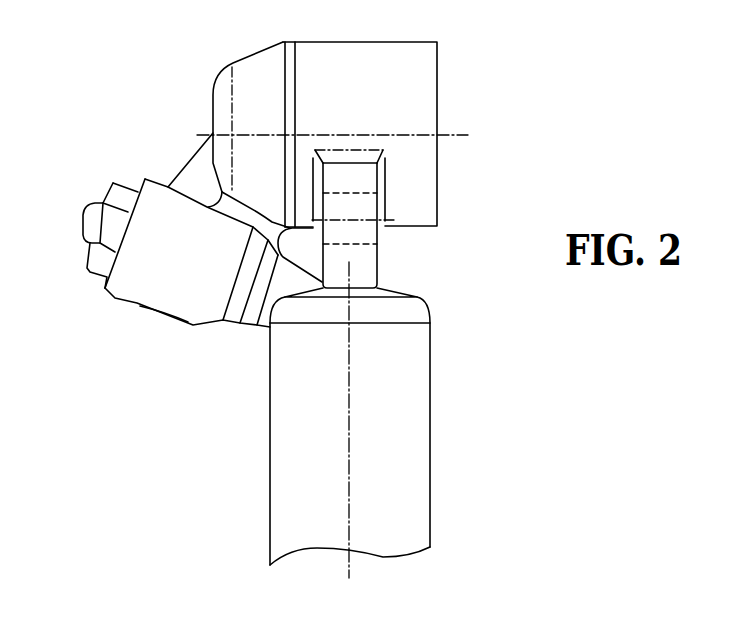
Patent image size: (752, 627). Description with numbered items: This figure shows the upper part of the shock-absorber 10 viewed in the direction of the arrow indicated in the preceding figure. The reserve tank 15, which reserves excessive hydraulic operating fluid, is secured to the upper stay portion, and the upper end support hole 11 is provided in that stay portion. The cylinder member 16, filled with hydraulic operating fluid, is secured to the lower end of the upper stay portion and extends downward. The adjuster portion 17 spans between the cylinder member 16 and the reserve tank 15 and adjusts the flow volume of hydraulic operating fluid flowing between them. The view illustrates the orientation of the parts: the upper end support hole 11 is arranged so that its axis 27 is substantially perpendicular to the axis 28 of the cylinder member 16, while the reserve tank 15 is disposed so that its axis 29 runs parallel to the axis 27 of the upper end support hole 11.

The shock-absorber 10 is at (153, 145).
The reserve tank 15 is at (388, 77).
The axis of the reserve tank 29 is at (448, 135).
The upper end support hole 11 is at (365, 193).
The axis of the upper end support hole 27 is at (365, 220).
The cylinder member 16 is at (407, 440).
The axis of the cylinder member 28 is at (350, 567).
The adjuster portion 17 is at (130, 278).